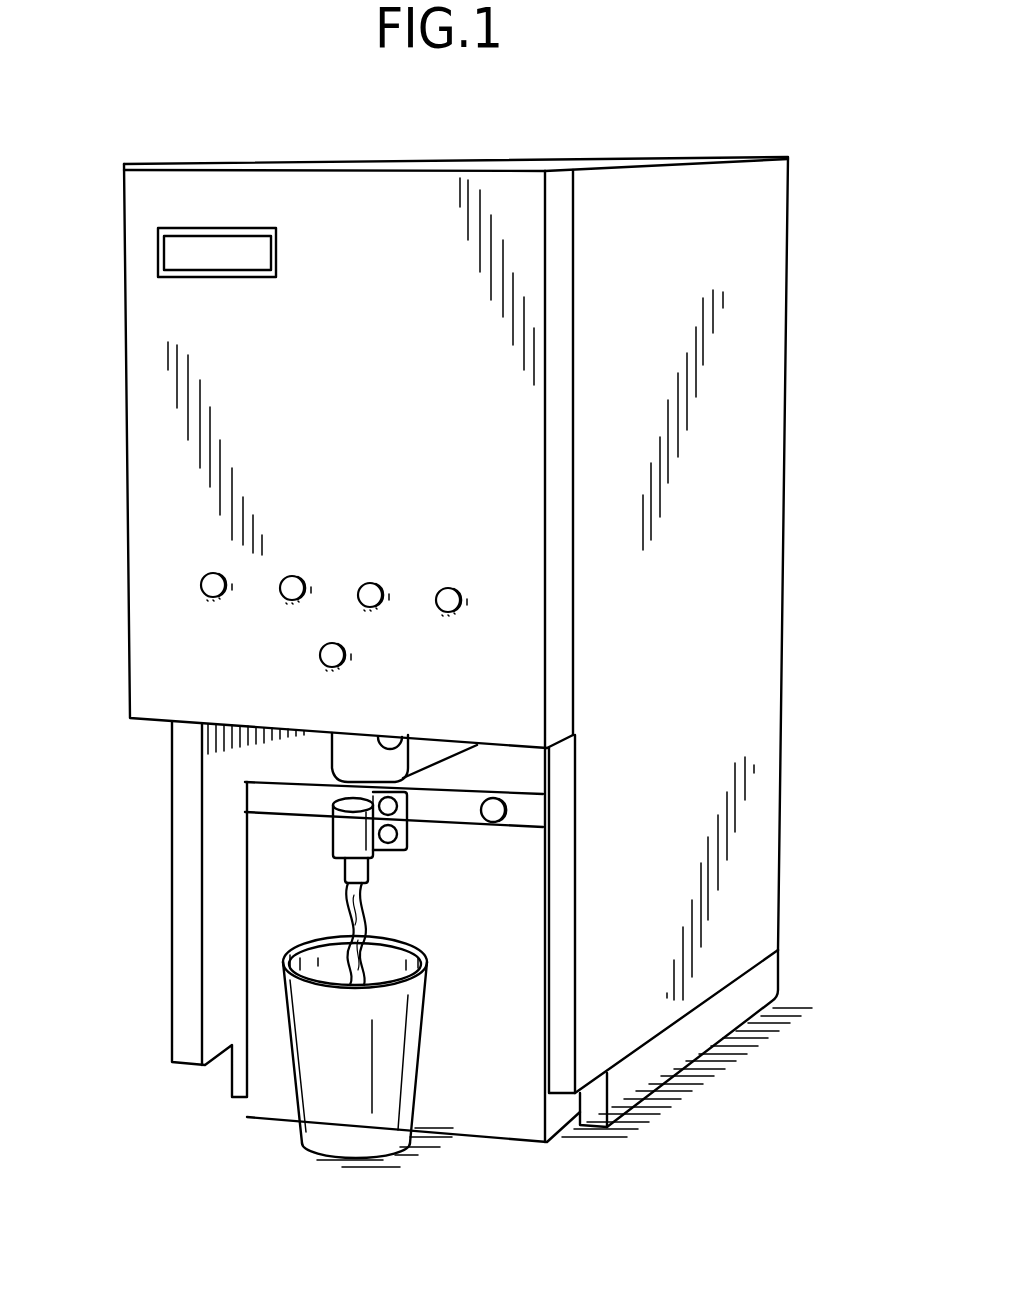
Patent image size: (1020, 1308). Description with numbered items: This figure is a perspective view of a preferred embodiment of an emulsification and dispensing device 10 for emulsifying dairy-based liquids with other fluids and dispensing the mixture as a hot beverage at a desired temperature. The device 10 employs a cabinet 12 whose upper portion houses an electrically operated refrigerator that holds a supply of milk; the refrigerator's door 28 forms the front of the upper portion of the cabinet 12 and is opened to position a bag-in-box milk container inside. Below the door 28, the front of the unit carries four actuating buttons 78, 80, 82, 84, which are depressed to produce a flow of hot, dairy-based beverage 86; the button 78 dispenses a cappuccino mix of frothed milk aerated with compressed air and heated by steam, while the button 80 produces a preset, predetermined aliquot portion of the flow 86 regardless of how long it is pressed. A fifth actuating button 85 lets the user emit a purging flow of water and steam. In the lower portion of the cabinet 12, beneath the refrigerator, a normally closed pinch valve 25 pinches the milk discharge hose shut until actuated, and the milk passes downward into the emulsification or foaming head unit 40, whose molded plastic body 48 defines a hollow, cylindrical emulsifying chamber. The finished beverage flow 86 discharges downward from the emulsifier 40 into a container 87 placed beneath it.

The emulsification and dispensing device 10 is at (828, 307).
The cabinet 12 is at (706, 555).
The door 28 is at (160, 397).
The actuating button 84 is at (206, 579).
The actuating button 82 is at (292, 576).
The actuating button 80 is at (370, 583).
The actuating button 78 is at (448, 588).
The fifth actuating button 85 is at (320, 655).
The pinch valve 25 is at (318, 753).
The emulsification or foaming head unit 40 is at (322, 838).
The molded plastic body 48 is at (357, 838).
The flow of hot dairy-based beverage 86 is at (395, 946).
The container 87 is at (390, 1045).